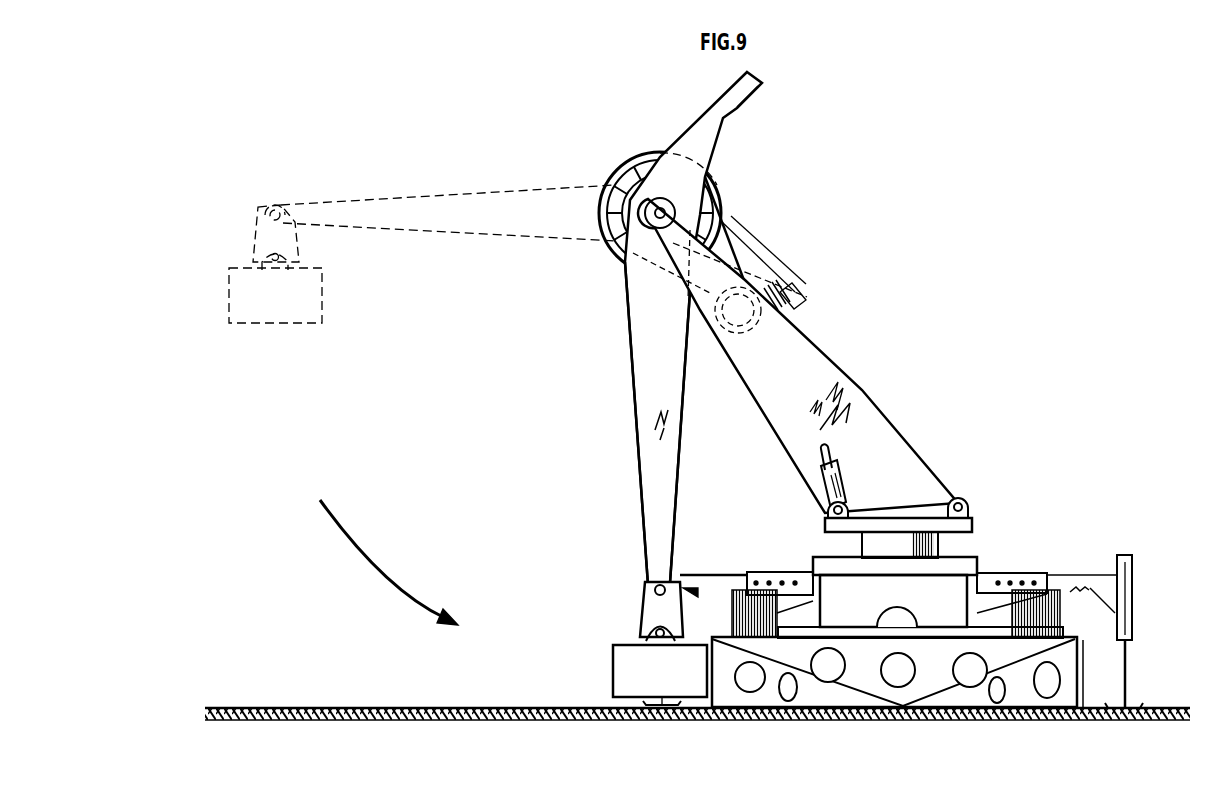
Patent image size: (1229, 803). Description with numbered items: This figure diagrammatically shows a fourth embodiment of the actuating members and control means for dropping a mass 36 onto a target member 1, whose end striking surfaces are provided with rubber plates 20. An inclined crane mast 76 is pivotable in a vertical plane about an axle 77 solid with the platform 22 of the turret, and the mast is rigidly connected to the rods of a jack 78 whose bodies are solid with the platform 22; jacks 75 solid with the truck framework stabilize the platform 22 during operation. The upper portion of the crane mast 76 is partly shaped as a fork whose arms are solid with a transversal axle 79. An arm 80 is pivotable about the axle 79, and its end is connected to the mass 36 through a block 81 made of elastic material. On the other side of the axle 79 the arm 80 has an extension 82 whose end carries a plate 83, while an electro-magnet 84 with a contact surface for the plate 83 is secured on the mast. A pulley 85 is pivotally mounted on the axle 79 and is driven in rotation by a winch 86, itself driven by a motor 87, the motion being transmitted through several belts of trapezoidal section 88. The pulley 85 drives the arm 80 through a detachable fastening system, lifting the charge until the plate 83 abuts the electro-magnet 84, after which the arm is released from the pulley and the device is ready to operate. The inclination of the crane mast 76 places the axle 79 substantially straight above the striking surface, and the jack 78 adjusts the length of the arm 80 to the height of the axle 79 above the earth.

The target member 1 is at (1072, 630).
The rubber plates 20 is at (707, 636).
The platform 22 is at (972, 527).
The mass 36 is at (618, 673).
The jacks 75 is at (1132, 607).
The crane mast 76 is at (835, 363).
The axle 77 is at (960, 502).
The jack 78 is at (825, 487).
The transversal axle 79 is at (645, 200).
The arm 80 is at (640, 386).
The block 81 is at (647, 608).
The extension 82 is at (713, 132).
The plate 83 is at (742, 107).
The electro-magnet 84 is at (788, 297).
The pulley 85 is at (647, 162).
The winch 86 is at (745, 323).
The motor 87 is at (728, 333).
The belts of trapezoidal section 88 is at (730, 230).